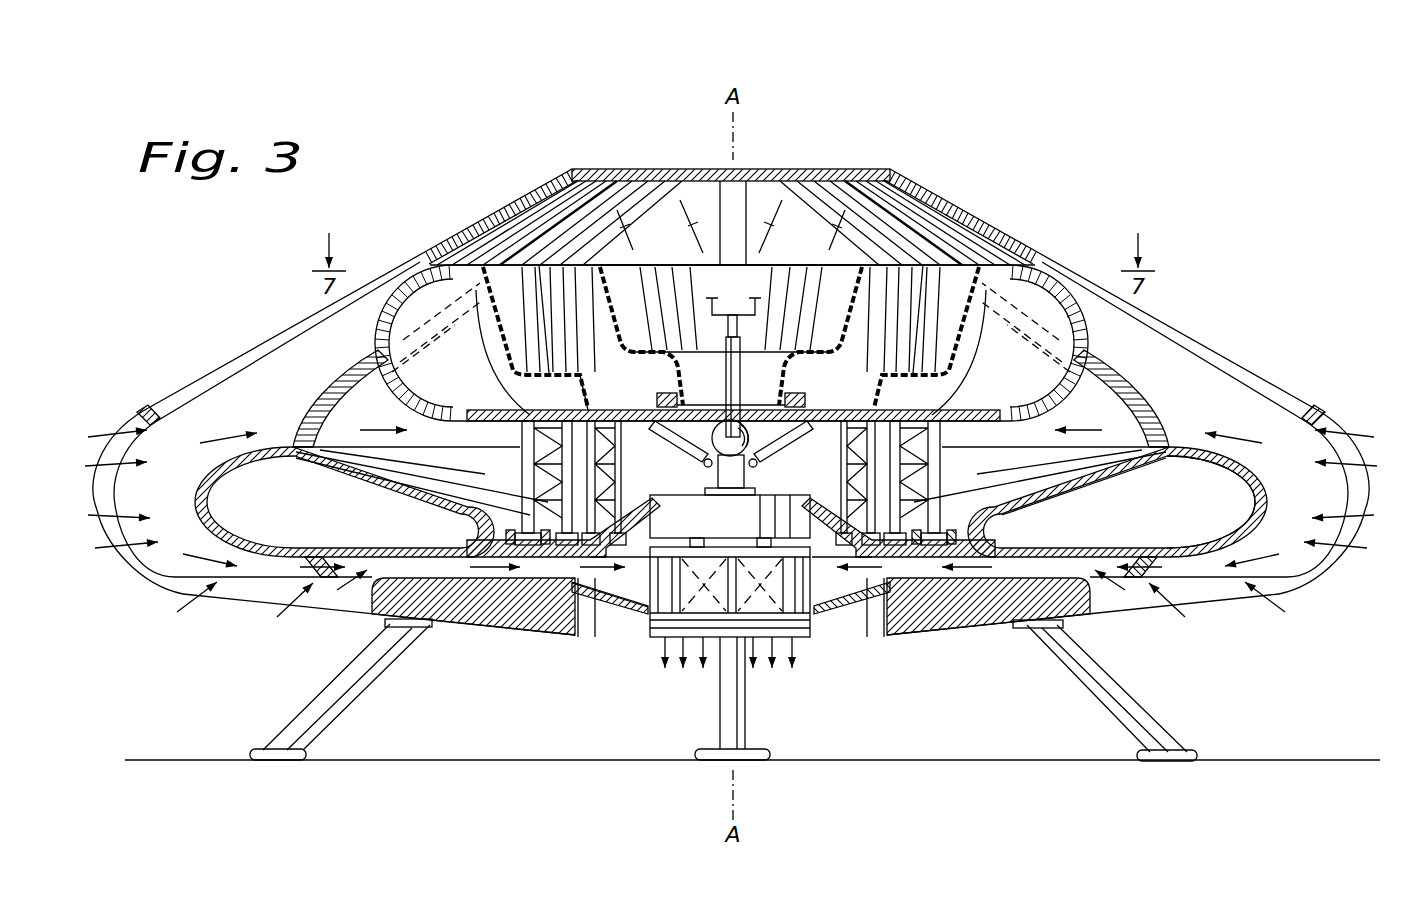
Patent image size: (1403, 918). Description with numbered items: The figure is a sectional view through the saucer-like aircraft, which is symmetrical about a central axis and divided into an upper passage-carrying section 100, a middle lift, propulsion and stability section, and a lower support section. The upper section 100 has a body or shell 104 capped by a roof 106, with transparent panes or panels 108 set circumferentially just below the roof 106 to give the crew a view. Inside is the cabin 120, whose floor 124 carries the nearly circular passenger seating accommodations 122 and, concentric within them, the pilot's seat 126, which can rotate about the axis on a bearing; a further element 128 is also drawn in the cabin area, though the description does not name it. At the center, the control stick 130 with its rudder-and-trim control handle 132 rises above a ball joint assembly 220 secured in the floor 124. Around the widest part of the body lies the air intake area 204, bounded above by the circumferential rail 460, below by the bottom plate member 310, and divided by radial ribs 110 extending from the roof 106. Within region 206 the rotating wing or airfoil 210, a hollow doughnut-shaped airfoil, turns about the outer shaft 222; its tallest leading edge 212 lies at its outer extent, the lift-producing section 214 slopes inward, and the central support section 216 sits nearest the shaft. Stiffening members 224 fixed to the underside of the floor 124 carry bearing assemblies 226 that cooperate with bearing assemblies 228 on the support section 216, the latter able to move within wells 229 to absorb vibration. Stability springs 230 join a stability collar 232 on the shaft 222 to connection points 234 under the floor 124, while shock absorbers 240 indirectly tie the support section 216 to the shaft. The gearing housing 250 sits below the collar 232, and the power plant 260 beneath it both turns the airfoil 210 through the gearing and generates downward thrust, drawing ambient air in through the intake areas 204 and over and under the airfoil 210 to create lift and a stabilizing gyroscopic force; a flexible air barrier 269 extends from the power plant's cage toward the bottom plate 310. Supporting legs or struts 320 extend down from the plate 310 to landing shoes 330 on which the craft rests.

The upper passage-carrying section 100 is at (292, 297).
The body or shell 104 is at (377, 328).
The roof 106 is at (770, 169).
The panes or panels 108 is at (810, 200).
The ribs 110 is at (540, 240).
The cabin 120 is at (705, 195).
The passenger seating accommodations 122 is at (496, 341).
The floor 124 is at (586, 395).
The pilot's seat 126 is at (862, 303).
The partition wall 128 is at (822, 405).
The control stick 130 is at (745, 352).
The rudder-and-trim control handle 132 is at (736, 306).
The air intake area 204 is at (148, 432).
The region 206 is at (1178, 570).
The rotating wing or airfoil 210 is at (1262, 484).
The leading edge 212 is at (1250, 503).
The lift-producing section 214 is at (1087, 490).
The central support section 216 is at (1000, 523).
The ball joint assembly 220 is at (739, 420).
The outer shaft 222 is at (726, 517).
The stiffening members 224 is at (520, 437).
The bearing assembly 226 is at (470, 541).
The bearing assembly 228 is at (472, 519).
The well 229 is at (528, 503).
The stability springs 230 is at (687, 457).
The stability collar 232 is at (748, 477).
The connection points 234 is at (642, 425).
The shock absorbers 240 is at (633, 505).
The gearing housing 250 is at (709, 532).
The power plant 260 is at (814, 606).
The flexible air barrier 269 is at (612, 612).
The bottom plate member 310 is at (948, 618).
The supporting legs or struts 320 is at (350, 686).
The landing shoes 330 is at (713, 760).
The rail 460 is at (145, 410).